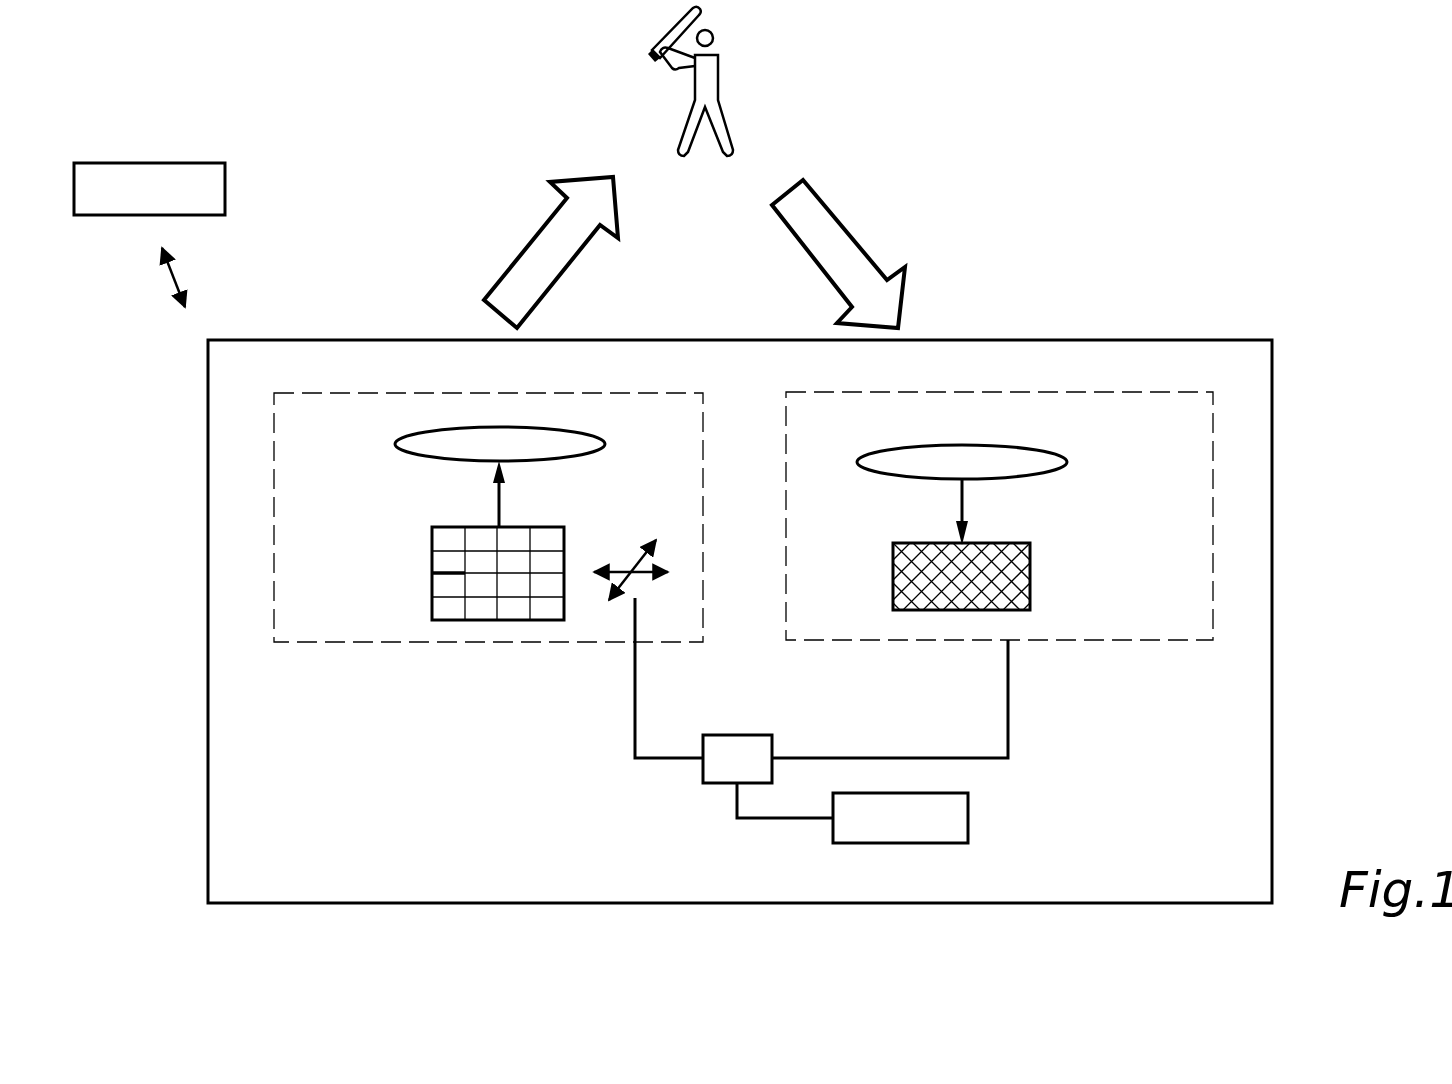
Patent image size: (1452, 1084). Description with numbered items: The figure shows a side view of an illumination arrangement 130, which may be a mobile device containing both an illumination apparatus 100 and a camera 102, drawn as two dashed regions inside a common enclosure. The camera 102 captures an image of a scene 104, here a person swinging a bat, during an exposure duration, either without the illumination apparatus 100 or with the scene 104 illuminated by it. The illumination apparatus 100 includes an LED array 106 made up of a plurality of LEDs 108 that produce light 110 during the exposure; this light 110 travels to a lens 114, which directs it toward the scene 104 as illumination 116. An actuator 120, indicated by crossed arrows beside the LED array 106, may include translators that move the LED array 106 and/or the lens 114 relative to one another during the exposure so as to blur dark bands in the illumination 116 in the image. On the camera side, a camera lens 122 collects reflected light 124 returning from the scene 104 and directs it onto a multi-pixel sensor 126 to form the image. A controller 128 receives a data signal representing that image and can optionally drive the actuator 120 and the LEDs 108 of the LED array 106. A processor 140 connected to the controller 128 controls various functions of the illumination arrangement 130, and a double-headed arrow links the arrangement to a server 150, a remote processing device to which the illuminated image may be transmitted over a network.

The illumination apparatus 100 is at (663, 643).
The camera 102 is at (1176, 641).
The scene 104 is at (692, 82).
The LED array 106 is at (430, 532).
The LEDs 108 is at (473, 587).
The light 110 is at (492, 495).
The lens 114 is at (588, 428).
The illumination 116 is at (545, 240).
The actuator 120 is at (600, 565).
The camera lens 122 is at (1018, 446).
The reflected light 124 is at (832, 218).
The multi-pixel sensor 126 is at (893, 558).
The controller 128 is at (766, 735).
The illumination arrangement 130 is at (274, 340).
The processor 140 is at (957, 843).
The server 150 is at (150, 163).